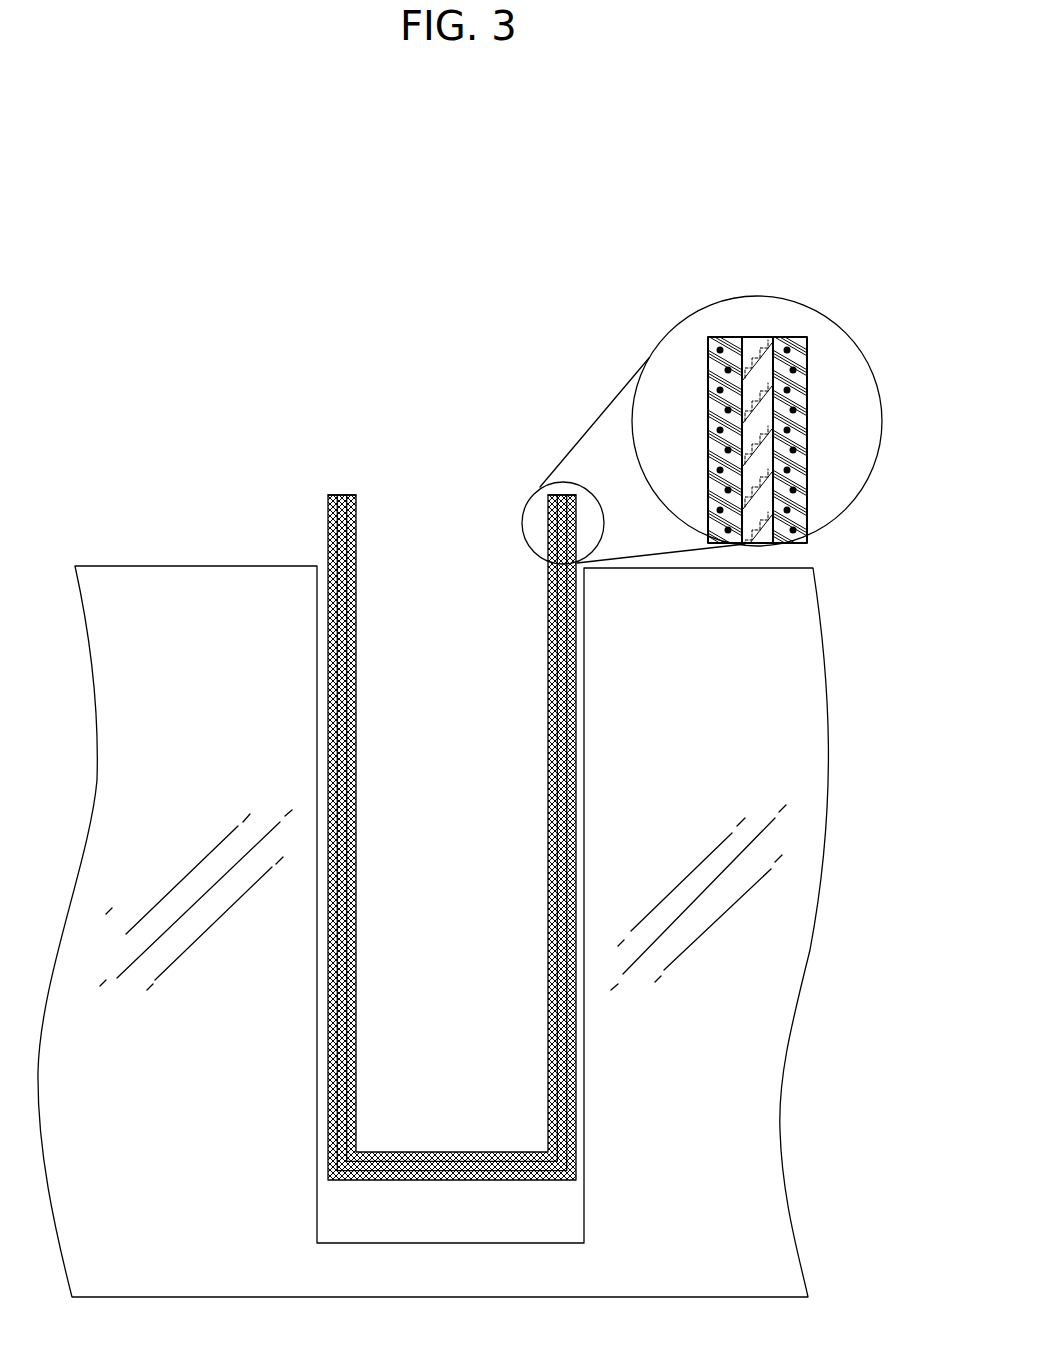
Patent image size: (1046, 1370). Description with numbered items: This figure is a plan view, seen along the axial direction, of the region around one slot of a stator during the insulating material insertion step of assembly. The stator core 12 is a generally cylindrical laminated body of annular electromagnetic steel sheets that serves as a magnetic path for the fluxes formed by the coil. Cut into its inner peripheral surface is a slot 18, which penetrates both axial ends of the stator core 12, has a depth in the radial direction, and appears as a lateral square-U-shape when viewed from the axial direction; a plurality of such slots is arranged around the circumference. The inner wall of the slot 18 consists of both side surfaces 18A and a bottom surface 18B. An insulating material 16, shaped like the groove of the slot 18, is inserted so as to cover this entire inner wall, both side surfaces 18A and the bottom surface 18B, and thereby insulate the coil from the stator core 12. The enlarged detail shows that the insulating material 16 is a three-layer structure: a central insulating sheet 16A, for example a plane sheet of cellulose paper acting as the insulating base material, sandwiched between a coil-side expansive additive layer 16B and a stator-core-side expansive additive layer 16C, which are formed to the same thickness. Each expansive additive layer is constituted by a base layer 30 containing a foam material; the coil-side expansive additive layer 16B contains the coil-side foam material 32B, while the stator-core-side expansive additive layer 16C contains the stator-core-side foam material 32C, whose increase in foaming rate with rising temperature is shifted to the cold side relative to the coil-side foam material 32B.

The stator core 12 is at (228, 607).
The slot 18 is at (457, 560).
The side surfaces 18A is at (327, 642).
The bottom surface 18B is at (388, 1242).
The insulating material 16 is at (847, 168).
The insulating sheet 16A is at (758, 350).
The coil-side expansive additive layer 16B is at (690, 218).
The stator-core-side expansive additive layer 16C is at (878, 218).
The base layer 30 is at (712, 367).
The coil-side foam material 32B is at (708, 345).
The stator-core-side foam material 32C is at (787, 345).